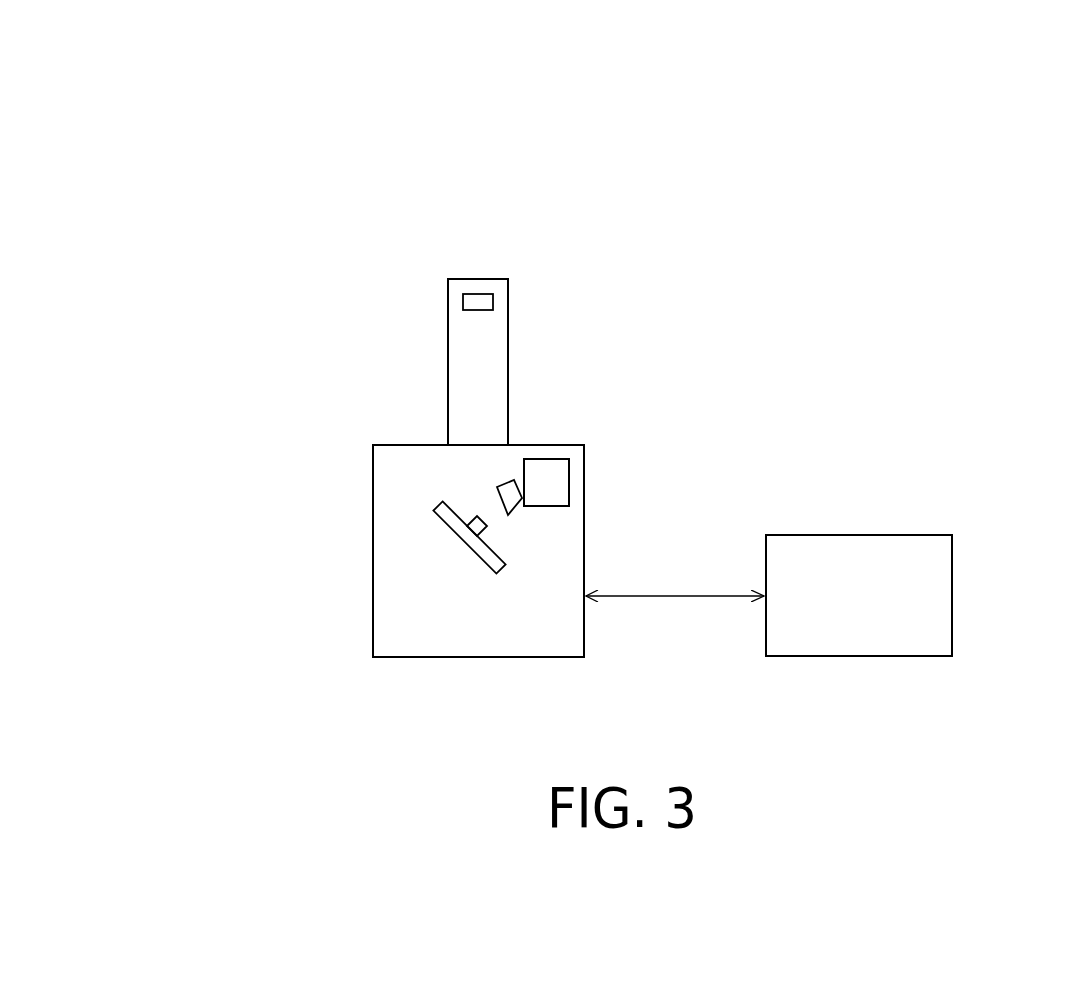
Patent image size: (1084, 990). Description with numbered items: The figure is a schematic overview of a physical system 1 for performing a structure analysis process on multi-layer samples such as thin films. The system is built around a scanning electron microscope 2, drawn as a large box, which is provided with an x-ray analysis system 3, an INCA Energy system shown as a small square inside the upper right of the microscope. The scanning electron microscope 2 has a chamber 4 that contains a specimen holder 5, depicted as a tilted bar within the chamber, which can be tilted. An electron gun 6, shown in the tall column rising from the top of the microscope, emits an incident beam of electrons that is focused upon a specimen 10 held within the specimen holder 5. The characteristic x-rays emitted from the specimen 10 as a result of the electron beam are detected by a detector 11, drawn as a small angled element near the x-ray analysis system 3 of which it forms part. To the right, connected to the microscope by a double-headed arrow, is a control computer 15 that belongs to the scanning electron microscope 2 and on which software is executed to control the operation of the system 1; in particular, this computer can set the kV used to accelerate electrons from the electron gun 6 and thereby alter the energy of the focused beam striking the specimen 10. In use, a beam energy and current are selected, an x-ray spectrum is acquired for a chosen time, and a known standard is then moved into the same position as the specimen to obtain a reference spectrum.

The physical system 1 is at (200, 113).
The scanning electron microscope 2 is at (310, 462).
The x-ray analysis system 3 is at (572, 473).
The chamber 4 is at (448, 595).
The specimen holder 5 is at (448, 537).
The electron gun 6 is at (495, 295).
The specimen 10 is at (460, 503).
The detector 11 is at (509, 485).
The control computer 15 is at (895, 611).